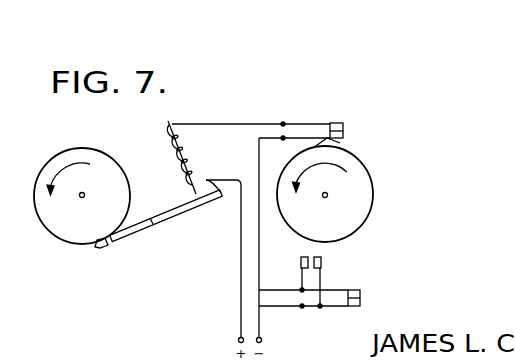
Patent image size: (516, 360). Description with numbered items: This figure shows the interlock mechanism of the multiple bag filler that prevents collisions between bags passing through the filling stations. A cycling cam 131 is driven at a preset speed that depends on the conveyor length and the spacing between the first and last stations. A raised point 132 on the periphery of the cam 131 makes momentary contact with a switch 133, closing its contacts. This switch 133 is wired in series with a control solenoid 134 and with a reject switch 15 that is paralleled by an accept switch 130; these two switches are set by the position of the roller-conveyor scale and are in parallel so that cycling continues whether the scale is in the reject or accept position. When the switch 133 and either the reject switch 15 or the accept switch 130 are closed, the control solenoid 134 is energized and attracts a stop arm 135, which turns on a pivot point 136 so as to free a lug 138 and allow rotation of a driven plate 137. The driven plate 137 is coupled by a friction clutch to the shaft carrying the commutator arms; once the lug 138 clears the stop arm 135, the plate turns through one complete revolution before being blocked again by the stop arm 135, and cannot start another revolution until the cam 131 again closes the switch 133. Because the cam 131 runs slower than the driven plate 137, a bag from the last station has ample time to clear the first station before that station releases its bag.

The driven plate 137 is at (82, 196).
The cycling cam 131 is at (325, 194).
The control solenoid 134 is at (183, 157).
The switch 133 is at (343, 125).
The raised point 132 is at (333, 142).
The stop arm 135 is at (132, 227).
The pivot point 136 is at (152, 221).
The lug 138 is at (98, 250).
The accept switch 130 is at (320, 253).
The reject switch 15 is at (361, 298).